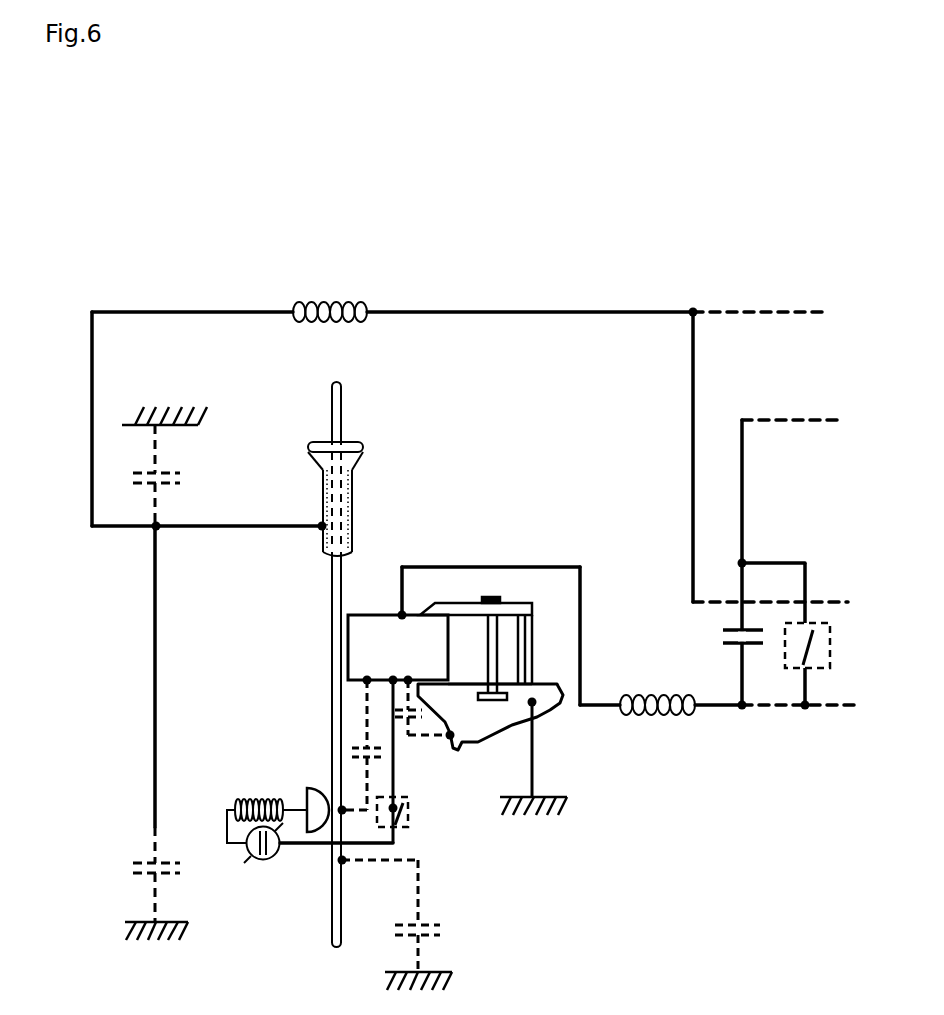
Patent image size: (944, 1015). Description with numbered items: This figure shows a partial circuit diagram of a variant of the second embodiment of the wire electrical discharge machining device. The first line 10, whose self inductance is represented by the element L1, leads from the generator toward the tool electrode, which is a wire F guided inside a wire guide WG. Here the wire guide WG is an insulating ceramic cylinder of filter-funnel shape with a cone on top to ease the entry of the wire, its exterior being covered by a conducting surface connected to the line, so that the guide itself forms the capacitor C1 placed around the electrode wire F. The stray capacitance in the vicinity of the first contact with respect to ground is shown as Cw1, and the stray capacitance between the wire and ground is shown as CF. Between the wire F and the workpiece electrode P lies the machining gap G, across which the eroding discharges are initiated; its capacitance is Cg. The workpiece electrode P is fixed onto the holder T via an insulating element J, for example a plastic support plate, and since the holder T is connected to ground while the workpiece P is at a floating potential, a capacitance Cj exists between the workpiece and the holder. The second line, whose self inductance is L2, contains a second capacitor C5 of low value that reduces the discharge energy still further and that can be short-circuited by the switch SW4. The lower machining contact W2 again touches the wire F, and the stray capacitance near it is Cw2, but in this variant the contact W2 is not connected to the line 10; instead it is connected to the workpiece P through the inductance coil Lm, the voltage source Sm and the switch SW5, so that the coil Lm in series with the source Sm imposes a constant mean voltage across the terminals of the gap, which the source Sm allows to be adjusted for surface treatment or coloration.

The first line 10 is at (505, 312).
The self inductance of the first line L1 is at (330, 329).
The stray capacitance near the first contact Cw1 is at (174, 466).
The stray capacitance near the second contact Cw2 is at (172, 883).
The wire guide WG is at (320, 499).
The capacitor C1 is at (352, 486).
The machining gap G is at (337, 660).
The wire electrode F is at (333, 717).
The workpiece electrode P is at (398, 647).
The insulating element J is at (468, 680).
The holder T is at (492, 749).
The capacitance between workpiece and holder Cj is at (422, 713).
The gap capacitance Cg is at (373, 745).
The switch SW5 is at (427, 761).
The inductance coil Lm is at (267, 805).
The second contact W2 is at (309, 795).
The voltage source Sm is at (265, 859).
The stray capacitance between wire and ground CF is at (401, 925).
The self inductance of the second line L2 is at (657, 724).
The second capacitor C5 is at (725, 644).
The switch SW4 is at (841, 635).